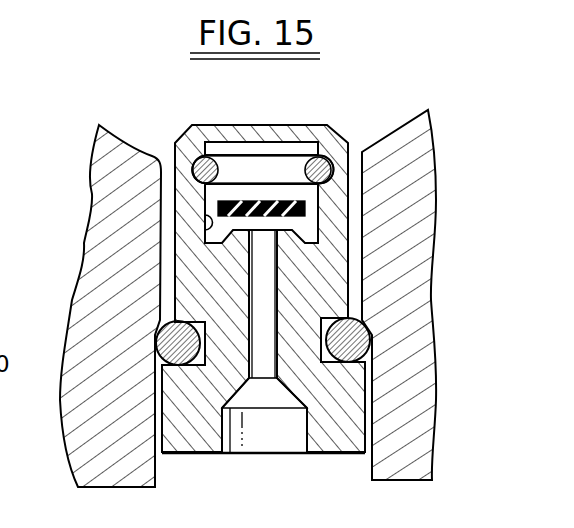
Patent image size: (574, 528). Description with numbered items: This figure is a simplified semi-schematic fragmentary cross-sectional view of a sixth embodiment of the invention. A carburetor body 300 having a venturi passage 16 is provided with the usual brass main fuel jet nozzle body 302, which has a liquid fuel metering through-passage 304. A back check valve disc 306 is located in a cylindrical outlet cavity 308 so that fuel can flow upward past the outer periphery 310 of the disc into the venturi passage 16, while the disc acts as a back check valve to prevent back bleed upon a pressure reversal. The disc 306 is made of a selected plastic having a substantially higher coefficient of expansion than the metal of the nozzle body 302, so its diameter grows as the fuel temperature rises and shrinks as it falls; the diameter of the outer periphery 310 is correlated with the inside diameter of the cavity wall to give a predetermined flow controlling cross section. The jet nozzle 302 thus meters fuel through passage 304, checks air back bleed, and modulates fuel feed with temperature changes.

The venturi passage 16 is at (397, 134).
The carburetor body 300 is at (110, 290).
The main fuel jet nozzle body 302 is at (192, 436).
The liquid fuel metering through-passage 304 is at (263, 358).
The back check valve disc 306 is at (250, 201).
The cylindrical outlet cavity 308 is at (205, 229).
The outer periphery of disc 310 is at (190, 181).